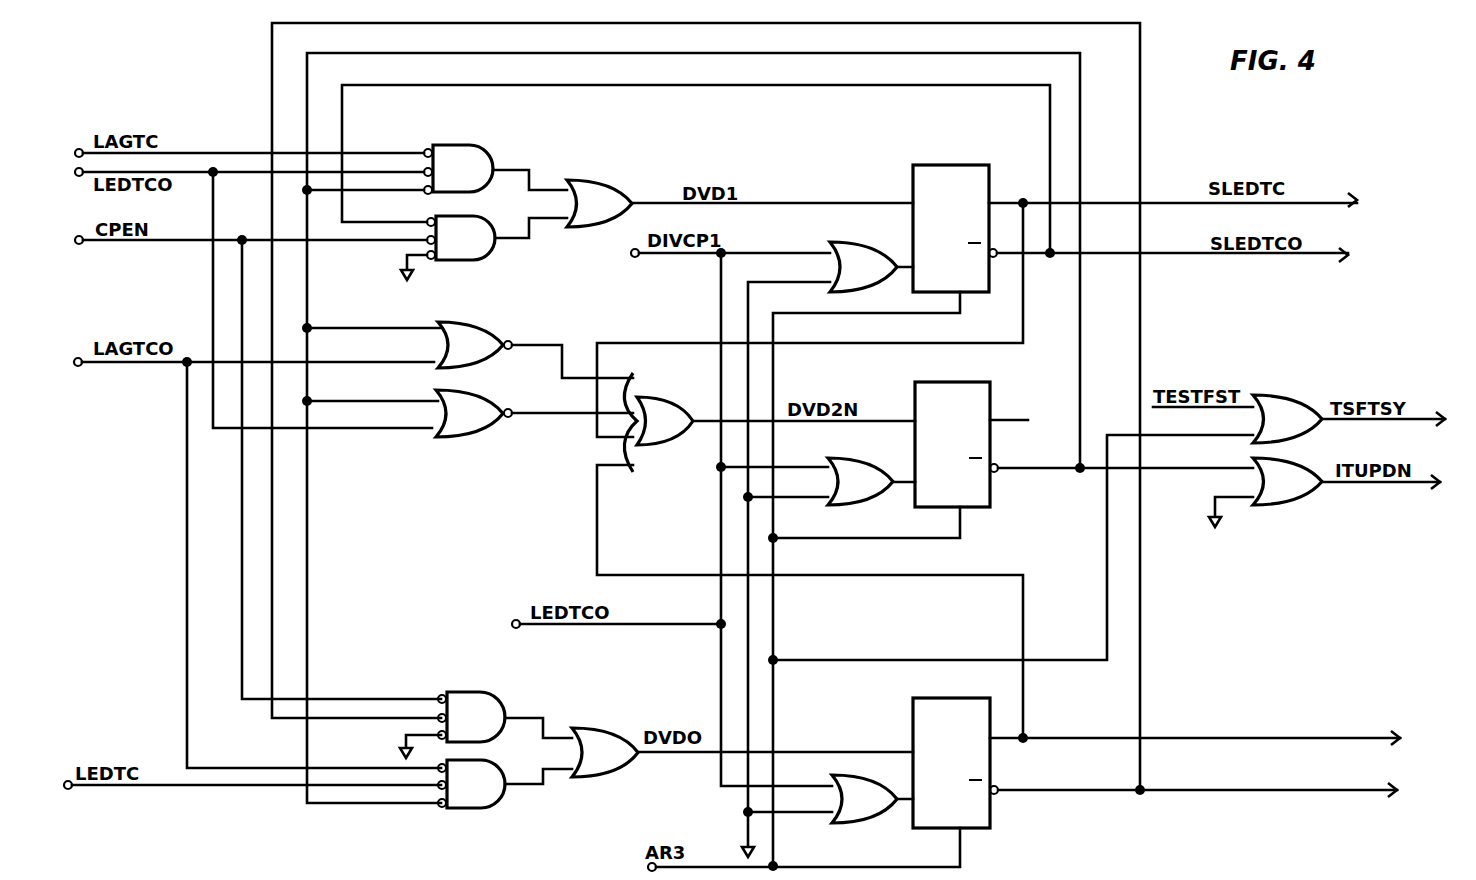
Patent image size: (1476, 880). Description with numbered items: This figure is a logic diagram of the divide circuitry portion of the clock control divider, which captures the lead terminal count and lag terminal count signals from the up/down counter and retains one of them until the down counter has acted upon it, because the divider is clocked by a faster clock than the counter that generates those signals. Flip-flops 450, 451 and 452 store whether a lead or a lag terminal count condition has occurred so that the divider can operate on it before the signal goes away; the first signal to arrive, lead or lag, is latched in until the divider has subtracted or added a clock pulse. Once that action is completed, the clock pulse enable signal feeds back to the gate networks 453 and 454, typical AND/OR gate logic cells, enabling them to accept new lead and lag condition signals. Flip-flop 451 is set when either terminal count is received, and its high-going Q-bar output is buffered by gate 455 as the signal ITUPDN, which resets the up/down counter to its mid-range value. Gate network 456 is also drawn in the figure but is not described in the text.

The flip-flop 450 is at (972, 164).
The flip-flop 451 is at (992, 394).
The flip-flop 452 is at (912, 712).
The gate network 453 is at (549, 149).
The gate network 454 is at (582, 707).
The gate 455 is at (1325, 393).
The NOR/exclusive-OR gate network 456 is at (553, 325).